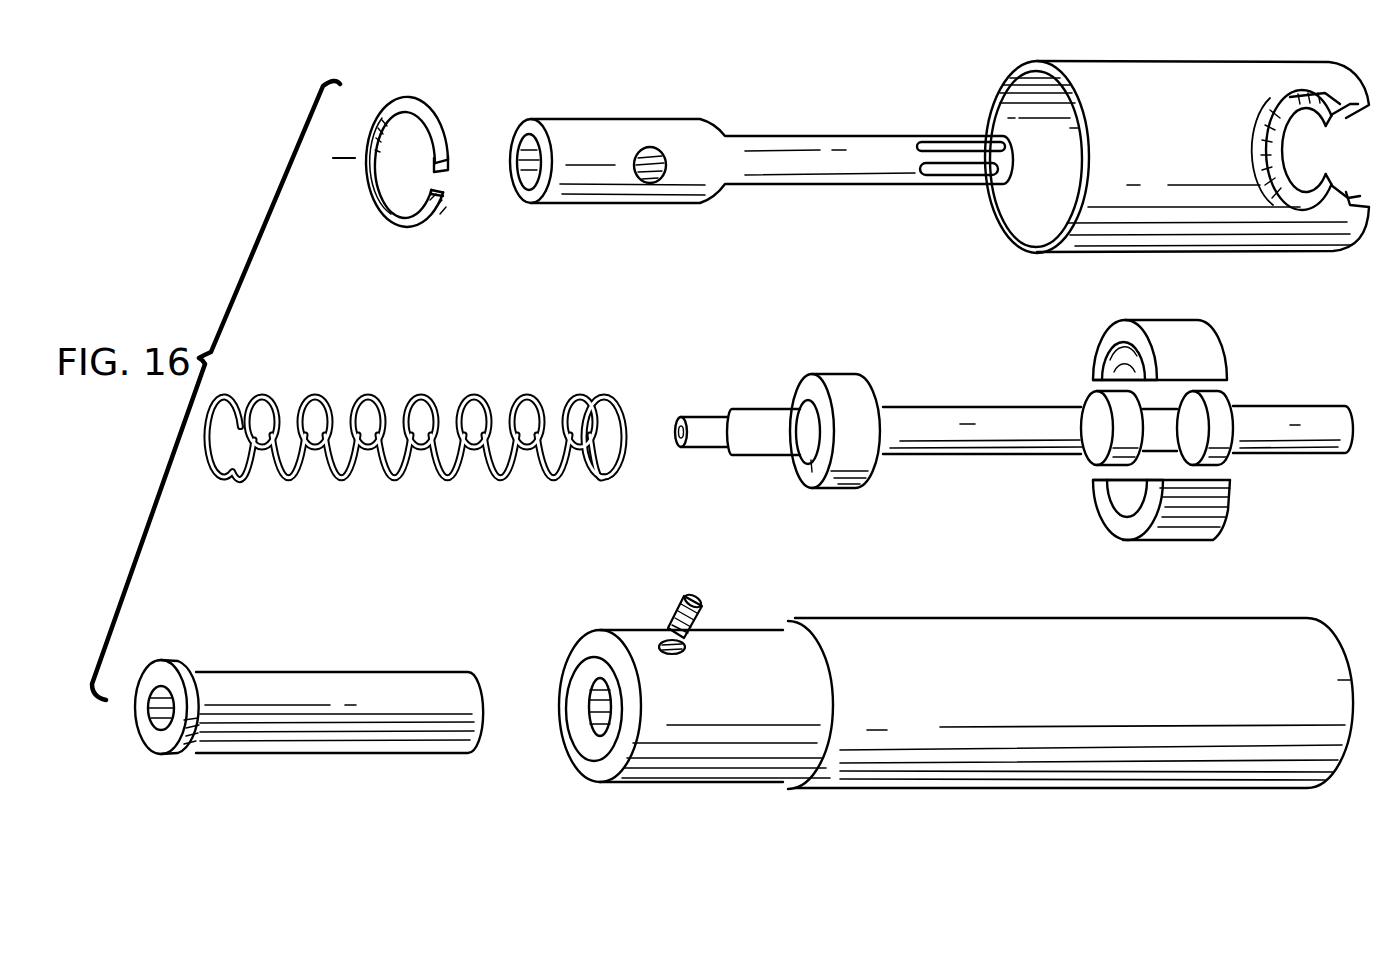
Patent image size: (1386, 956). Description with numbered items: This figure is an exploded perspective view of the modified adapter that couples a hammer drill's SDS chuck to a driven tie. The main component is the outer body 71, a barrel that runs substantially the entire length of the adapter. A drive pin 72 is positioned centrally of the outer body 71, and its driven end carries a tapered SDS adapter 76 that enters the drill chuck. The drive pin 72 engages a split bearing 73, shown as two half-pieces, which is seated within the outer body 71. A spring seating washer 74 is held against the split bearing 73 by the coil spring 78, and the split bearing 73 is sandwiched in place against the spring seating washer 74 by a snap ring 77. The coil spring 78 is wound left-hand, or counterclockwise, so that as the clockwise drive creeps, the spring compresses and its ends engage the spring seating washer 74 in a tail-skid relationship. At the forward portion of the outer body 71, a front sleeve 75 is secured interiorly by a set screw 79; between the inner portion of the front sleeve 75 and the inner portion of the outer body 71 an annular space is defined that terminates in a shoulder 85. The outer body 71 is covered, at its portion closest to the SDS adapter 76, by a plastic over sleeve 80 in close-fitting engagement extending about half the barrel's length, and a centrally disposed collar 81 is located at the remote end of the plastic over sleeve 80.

The outer body 71 is at (705, 784).
The drive pin 72 is at (965, 460).
The split bearing 73 is at (1223, 507).
The spring seating washer 74 is at (835, 377).
The front sleeve 75 is at (360, 672).
The tapered SDS adapter 76 is at (590, 119).
The snap ring 77 is at (402, 98).
The coil spring 78 is at (465, 478).
The set screw 79 is at (688, 594).
The plastic over sleeve 80 is at (1196, 166).
The collar 81 is at (1366, 192).
The shoulder 85 is at (178, 660).